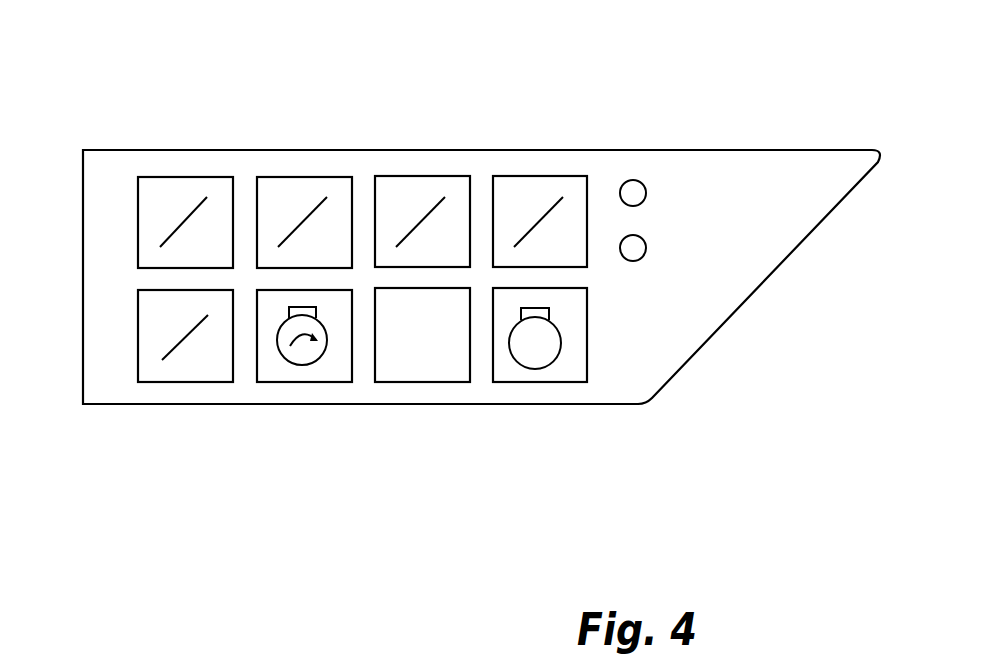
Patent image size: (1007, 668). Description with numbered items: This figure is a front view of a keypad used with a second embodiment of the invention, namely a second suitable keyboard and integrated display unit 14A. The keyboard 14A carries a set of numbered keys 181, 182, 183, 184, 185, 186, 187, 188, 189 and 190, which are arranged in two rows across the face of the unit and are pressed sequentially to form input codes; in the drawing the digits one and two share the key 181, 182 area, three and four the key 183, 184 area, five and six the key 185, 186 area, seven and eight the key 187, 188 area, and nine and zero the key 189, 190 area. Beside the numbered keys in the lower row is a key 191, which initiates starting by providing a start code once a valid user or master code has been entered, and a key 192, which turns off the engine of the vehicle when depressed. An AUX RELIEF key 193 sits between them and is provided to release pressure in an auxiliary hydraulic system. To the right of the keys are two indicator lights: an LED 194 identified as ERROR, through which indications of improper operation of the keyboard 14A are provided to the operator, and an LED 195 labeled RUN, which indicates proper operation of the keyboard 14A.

The keyboard and integrated display unit 14A is at (697, 87).
The key 181 is at (178, 198).
The key 182 is at (215, 208).
The key 183 is at (297, 190).
The key 184 is at (332, 208).
The key 185 is at (412, 190).
The key 186 is at (453, 215).
The key 187 is at (533, 190).
The key 188 is at (568, 213).
The key 189 is at (148, 320).
The key 190 is at (182, 357).
The key 191 is at (297, 368).
The key 192 is at (558, 368).
The AUX RELIEF key 193 is at (417, 368).
The LED 194 is at (639, 261).
The LED 195 is at (645, 181).